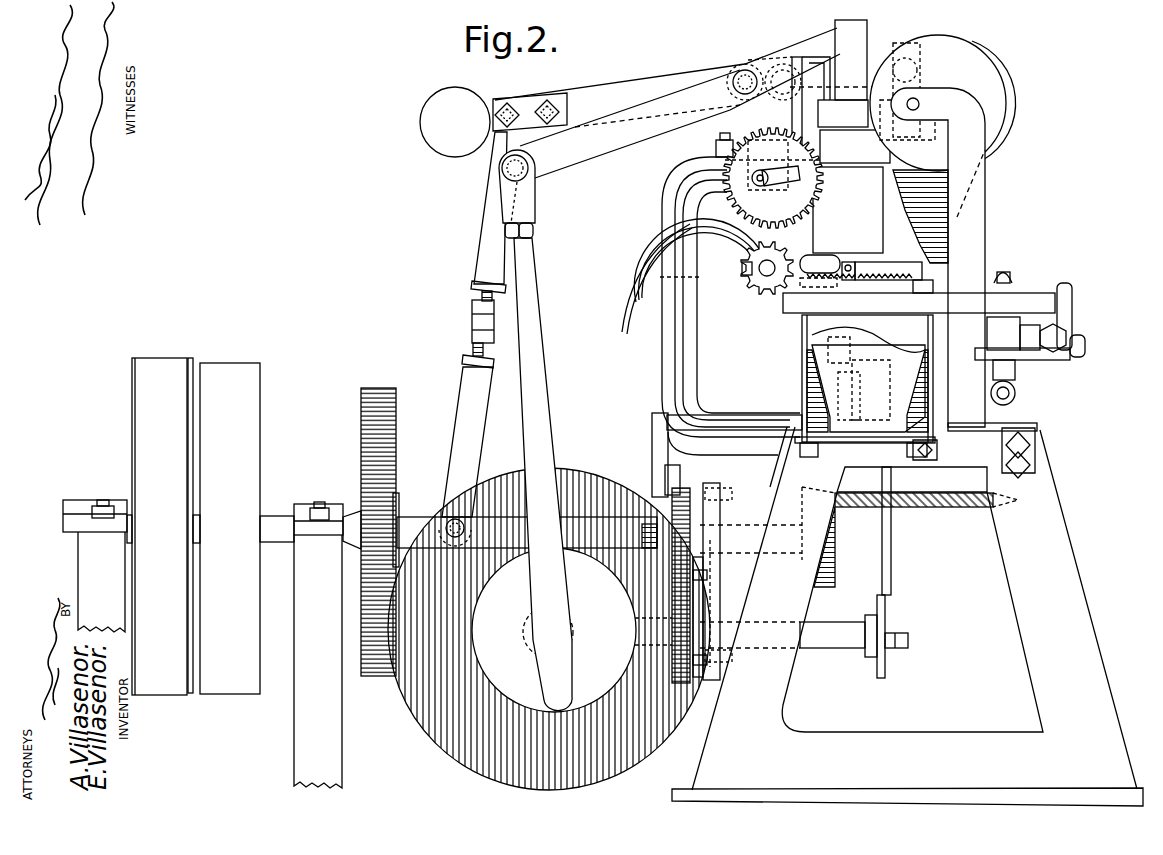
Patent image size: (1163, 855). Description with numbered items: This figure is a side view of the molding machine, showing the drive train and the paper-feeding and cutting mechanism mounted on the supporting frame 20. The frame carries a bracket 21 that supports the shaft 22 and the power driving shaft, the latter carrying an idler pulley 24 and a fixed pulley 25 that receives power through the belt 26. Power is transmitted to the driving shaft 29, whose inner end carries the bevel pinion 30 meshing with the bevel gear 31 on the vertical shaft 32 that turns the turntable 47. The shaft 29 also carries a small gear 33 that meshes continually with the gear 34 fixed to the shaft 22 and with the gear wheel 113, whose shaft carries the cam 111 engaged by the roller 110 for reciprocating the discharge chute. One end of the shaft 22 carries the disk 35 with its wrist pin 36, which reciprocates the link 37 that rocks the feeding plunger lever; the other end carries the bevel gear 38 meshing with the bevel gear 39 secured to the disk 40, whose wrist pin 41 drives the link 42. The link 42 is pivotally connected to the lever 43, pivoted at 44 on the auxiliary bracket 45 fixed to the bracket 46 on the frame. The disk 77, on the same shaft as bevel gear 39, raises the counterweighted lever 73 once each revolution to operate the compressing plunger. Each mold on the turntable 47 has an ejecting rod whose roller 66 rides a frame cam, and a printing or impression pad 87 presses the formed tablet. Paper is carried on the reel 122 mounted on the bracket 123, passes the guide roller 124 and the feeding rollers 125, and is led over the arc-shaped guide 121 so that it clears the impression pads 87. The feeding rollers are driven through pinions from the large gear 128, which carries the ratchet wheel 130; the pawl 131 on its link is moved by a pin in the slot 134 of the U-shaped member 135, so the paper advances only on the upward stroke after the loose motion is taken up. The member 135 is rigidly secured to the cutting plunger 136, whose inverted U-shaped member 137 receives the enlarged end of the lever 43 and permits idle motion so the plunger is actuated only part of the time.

The supporting frame 20 is at (1088, 760).
The bracket 21 is at (90, 570).
The shaft 22 is at (826, 641).
The idler pulley 24 is at (190, 362).
The fixed pulley 25 is at (228, 366).
The belt 26 is at (148, 362).
The shaft 29 is at (392, 530).
The bevel pinion 30 is at (835, 555).
The bevel gear 31 is at (947, 508).
The vertical shaft 32 is at (927, 482).
The small gear 33 is at (393, 495).
The gear 34 is at (618, 724).
The disk 35 is at (877, 678).
The wrist pin 36 is at (905, 638).
The link 37 is at (892, 573).
The bevel gear 38 is at (378, 392).
The bevel gear 39 is at (528, 642).
The disk 40 is at (554, 630).
The wrist pin 41 is at (545, 695).
The link 42 is at (545, 410).
The lever 43 is at (612, 147).
The pivot 44 is at (745, 70).
The auxiliary bracket 45 is at (716, 138).
The bracket 46 is at (662, 208).
The turntable 47 is at (1020, 300).
The roller 66 is at (1017, 395).
The lever 73 is at (622, 88).
The disk 77 is at (566, 478).
The impression pad 87 is at (758, 290).
The roller 110 is at (682, 490).
The cam 111 is at (652, 462).
The gear wheel 113 is at (690, 562).
The arc-shaped guide 121 is at (707, 247).
The reel 122 is at (1005, 106).
The bracket 123 is at (972, 218).
The roller 124 is at (860, 262).
The feeding rollers 125 is at (838, 258).
The large gear 128 is at (835, 200).
The ratchet wheel 130 is at (766, 196).
The pawl 131 is at (761, 179).
The slot 134 is at (855, 146).
The U-shaped member 135 is at (810, 57).
The cutting plunger 136 is at (843, 113).
The inverted U-shaped member 137 is at (867, 25).